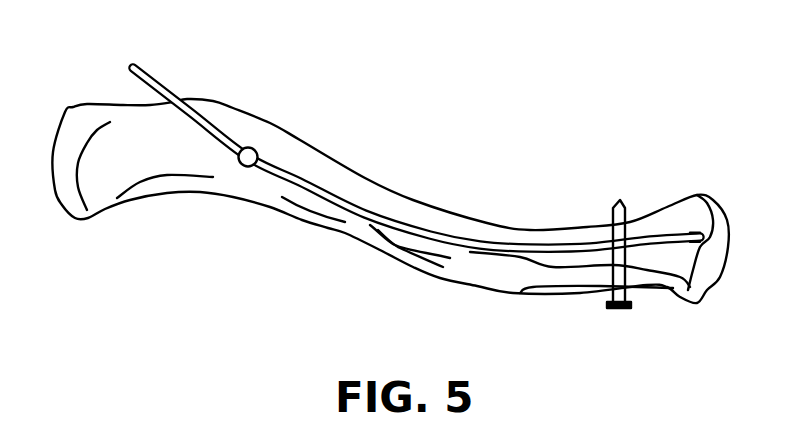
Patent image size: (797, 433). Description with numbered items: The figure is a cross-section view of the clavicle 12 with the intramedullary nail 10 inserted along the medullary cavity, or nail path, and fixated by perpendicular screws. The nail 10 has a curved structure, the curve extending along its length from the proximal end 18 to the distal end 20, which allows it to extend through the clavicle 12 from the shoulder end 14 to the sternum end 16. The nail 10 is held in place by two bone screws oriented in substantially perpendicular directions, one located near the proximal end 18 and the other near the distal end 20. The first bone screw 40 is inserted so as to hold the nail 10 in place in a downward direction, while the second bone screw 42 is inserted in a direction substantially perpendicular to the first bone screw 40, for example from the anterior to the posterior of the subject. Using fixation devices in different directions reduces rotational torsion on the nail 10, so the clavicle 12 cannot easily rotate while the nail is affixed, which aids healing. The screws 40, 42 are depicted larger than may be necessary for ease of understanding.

The nail 10 is at (371, 226).
The clavicle 12 is at (412, 202).
The shoulder end 14 is at (65, 114).
The sternum end 16 is at (698, 193).
The proximal end 18 is at (150, 66).
The distal end 20 is at (688, 248).
The first bone screw 40 is at (620, 200).
The second bone screw 42 is at (255, 148).